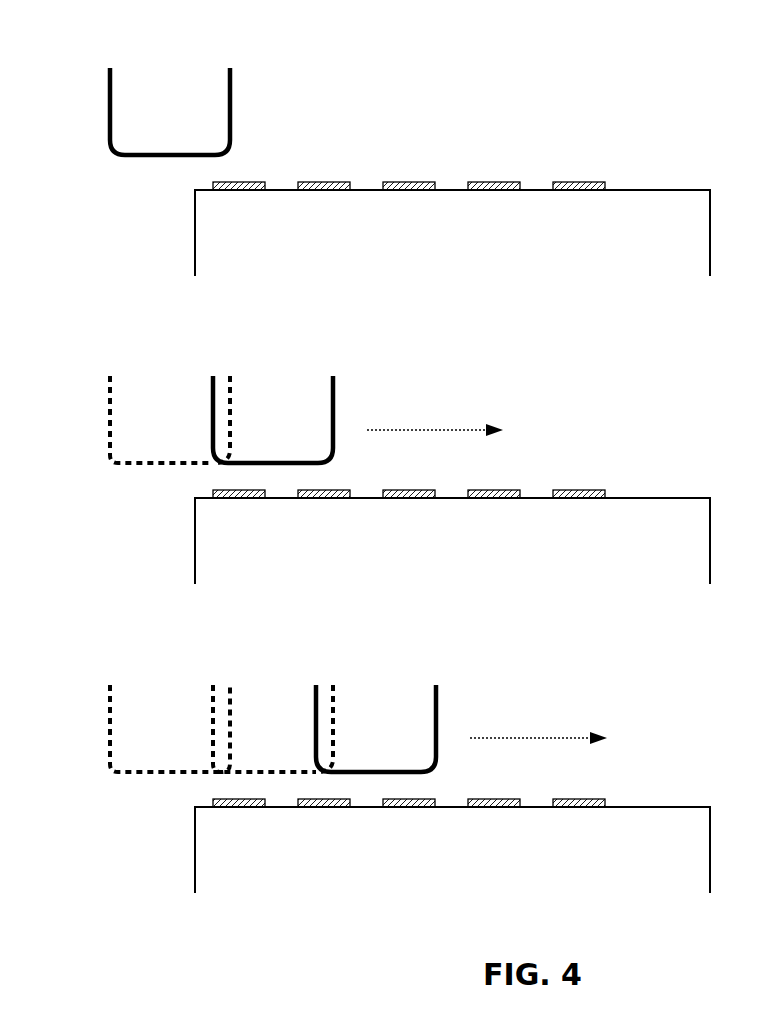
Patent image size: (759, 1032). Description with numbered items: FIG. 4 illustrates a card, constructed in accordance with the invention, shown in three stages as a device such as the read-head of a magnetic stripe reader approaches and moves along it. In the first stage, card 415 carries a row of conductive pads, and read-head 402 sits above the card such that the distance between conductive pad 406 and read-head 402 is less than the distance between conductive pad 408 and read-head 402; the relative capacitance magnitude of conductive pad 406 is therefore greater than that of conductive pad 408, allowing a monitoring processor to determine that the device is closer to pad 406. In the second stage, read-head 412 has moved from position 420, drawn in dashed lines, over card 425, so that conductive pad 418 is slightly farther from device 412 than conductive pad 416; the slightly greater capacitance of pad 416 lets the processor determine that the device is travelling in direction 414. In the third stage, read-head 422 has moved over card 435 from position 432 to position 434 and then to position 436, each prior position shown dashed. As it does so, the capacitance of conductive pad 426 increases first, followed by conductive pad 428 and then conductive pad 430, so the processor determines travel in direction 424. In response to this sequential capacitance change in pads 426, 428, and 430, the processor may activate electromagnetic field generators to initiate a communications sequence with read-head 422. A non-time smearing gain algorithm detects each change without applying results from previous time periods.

The read-head 402 is at (110, 88).
The conductive pad 406 is at (218, 186).
The conductive pad 408 is at (304, 186).
The card 415 is at (472, 256).
The read-head 412 is at (213, 398).
The direction 414 is at (385, 430).
The conductive pad 416 is at (218, 494).
The conductive pad 418 is at (304, 494).
The position 420 is at (122, 440).
The card 425 is at (472, 565).
The read-head 422 is at (316, 707).
The direction 424 is at (490, 738).
The conductive pad 426 is at (218, 803).
The conductive pad 428 is at (304, 803).
The conductive pad 430 is at (390, 803).
The position 432 is at (125, 748).
The position 434 is at (262, 703).
The position 436 is at (387, 703).
The card 435 is at (472, 874).